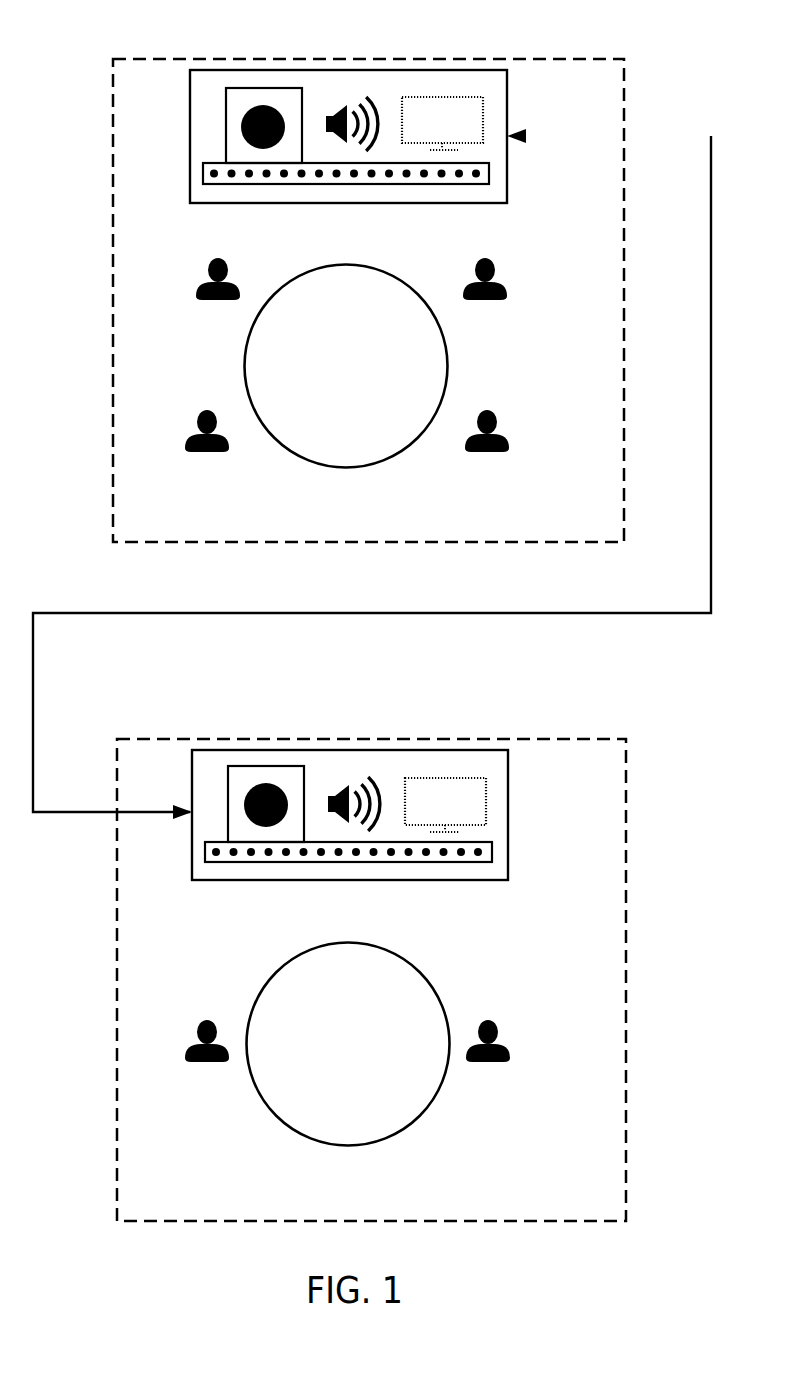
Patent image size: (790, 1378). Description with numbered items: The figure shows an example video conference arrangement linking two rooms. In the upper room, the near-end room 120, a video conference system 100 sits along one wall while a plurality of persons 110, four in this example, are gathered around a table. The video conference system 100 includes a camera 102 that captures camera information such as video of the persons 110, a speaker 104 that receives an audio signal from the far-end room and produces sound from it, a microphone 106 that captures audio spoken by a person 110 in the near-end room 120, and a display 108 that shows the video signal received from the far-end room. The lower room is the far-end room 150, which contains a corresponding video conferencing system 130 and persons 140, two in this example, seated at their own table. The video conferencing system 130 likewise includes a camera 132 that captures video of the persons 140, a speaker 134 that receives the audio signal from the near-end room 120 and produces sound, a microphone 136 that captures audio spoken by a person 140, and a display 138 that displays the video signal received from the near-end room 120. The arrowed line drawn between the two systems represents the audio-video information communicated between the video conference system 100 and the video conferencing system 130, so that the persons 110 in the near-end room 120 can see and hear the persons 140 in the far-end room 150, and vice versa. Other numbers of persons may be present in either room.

The video conference system 100 is at (190, 134).
The camera 102 is at (262, 88).
The speaker 104 is at (330, 112).
The microphone 106 is at (489, 174).
The display 108 is at (448, 97).
The persons 110 is at (508, 440).
The near-end room 120 is at (342, 531).
The video conferencing system 130 is at (220, 749).
The camera 132 is at (277, 766).
The speaker 134 is at (331, 792).
The microphone 136 is at (492, 852).
The display 138 is at (438, 778).
The persons 140 is at (509, 1052).
The far-end room 150 is at (340, 1209).